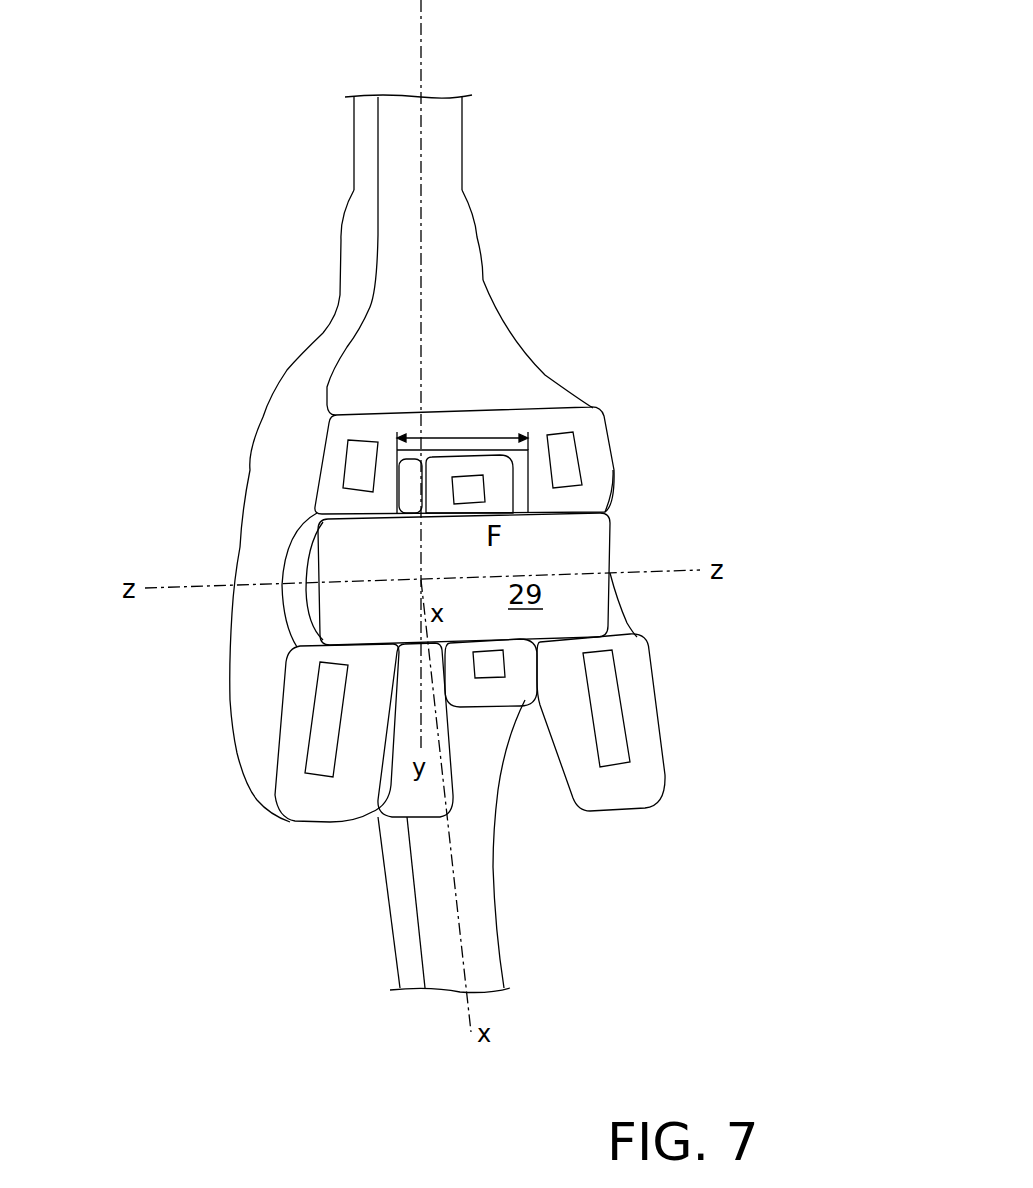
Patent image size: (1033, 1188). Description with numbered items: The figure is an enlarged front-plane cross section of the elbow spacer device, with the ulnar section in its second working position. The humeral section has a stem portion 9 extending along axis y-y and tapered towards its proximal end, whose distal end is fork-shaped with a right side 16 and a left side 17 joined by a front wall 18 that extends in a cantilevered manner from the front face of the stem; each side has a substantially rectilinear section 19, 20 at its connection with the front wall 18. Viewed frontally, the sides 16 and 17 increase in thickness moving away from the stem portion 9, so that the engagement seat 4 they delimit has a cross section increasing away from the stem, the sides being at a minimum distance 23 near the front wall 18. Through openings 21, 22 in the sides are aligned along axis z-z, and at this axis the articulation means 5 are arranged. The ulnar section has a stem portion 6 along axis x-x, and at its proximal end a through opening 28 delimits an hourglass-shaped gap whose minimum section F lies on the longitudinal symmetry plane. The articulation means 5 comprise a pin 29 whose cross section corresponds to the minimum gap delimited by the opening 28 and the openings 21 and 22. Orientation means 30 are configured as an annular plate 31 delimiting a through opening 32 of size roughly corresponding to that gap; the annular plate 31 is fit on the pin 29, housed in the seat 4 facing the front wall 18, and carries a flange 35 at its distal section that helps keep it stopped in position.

The engagement seat 4 is at (520, 777).
The articulation means 5 is at (440, 419).
The stem portion 6 is at (488, 935).
The stem portion 9 is at (443, 133).
The right side 16 is at (658, 717).
The left side 17 is at (247, 665).
The front wall 18 is at (437, 363).
The first rectilinear section 19 is at (540, 358).
The first rectilinear section 20 is at (330, 417).
The through opening 21 is at (618, 632).
The through opening 22 is at (285, 570).
The minimum distance 23 is at (463, 438).
The through opening 28 is at (513, 507).
The pin 29 is at (464, 579).
The orientation means 30 is at (320, 880).
The annular plate 31 is at (440, 833).
The through opening 32 is at (337, 503).
The flange 35 is at (375, 803).